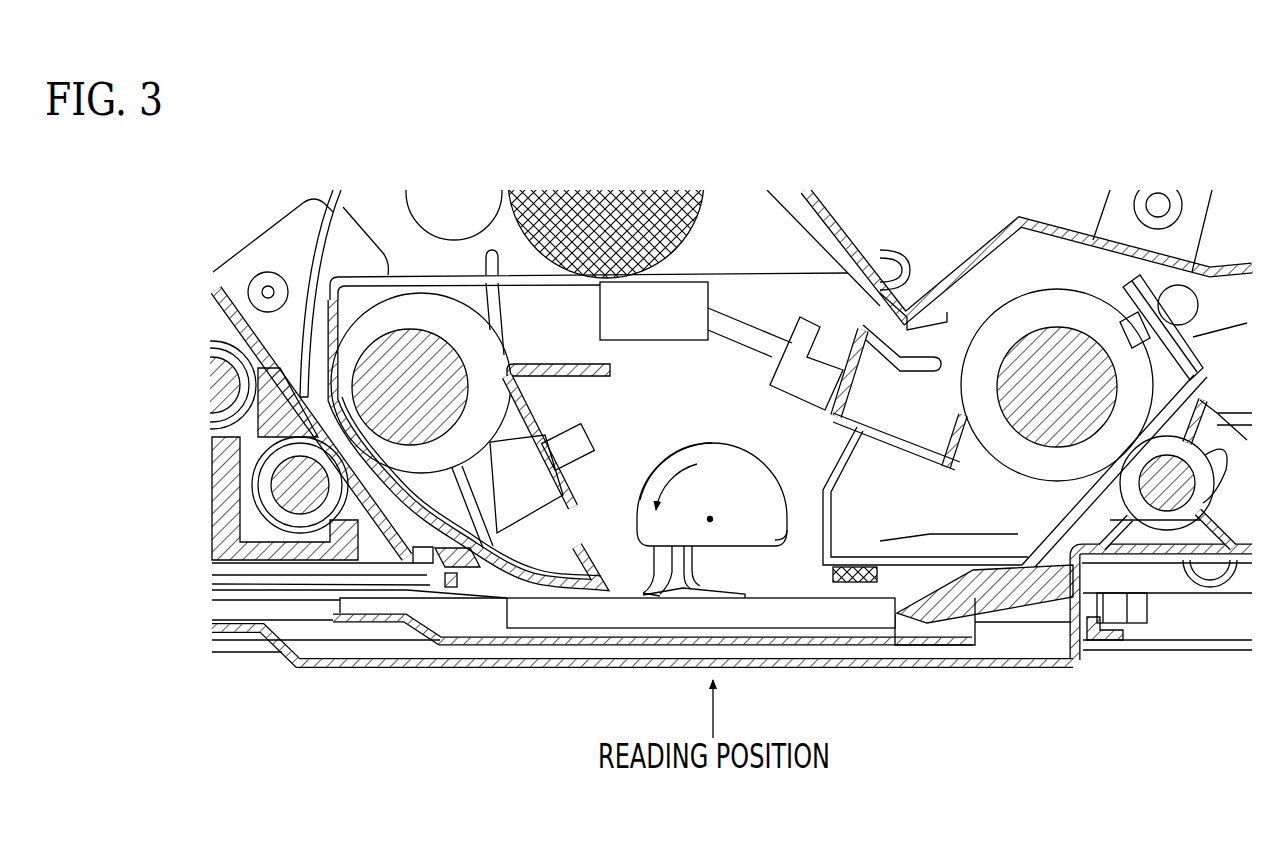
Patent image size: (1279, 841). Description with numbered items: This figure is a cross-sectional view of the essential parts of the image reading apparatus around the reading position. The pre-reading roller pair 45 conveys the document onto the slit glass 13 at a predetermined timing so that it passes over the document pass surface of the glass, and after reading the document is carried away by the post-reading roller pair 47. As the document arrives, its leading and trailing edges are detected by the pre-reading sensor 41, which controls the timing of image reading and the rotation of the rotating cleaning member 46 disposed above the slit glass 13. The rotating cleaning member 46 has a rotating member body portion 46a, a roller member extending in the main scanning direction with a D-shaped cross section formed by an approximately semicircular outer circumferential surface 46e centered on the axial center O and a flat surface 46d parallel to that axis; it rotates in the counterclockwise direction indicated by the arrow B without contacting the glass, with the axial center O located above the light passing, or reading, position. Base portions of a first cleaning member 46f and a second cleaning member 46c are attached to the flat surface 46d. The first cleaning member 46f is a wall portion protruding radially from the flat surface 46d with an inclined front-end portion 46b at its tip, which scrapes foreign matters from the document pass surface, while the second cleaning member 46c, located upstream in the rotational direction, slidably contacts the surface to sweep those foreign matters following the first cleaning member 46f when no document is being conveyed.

The pre-reading roller pair 45 is at (415, 286).
The post-reading roller pair 47 is at (1071, 287).
The rotating cleaning member 46 is at (712, 545).
The rotating member body portion 46a is at (758, 472).
The inclined front-end portion 46b is at (730, 600).
The second cleaning member 46c is at (650, 582).
The flat surface 46d is at (778, 547).
The outer circumferential surface 46e is at (672, 464).
The first cleaning member 46f is at (692, 582).
The slit glass 13 is at (598, 616).
The pre-reading sensor 41 is at (543, 500).
The arrow B is at (676, 488).
The axial center O is at (712, 519).